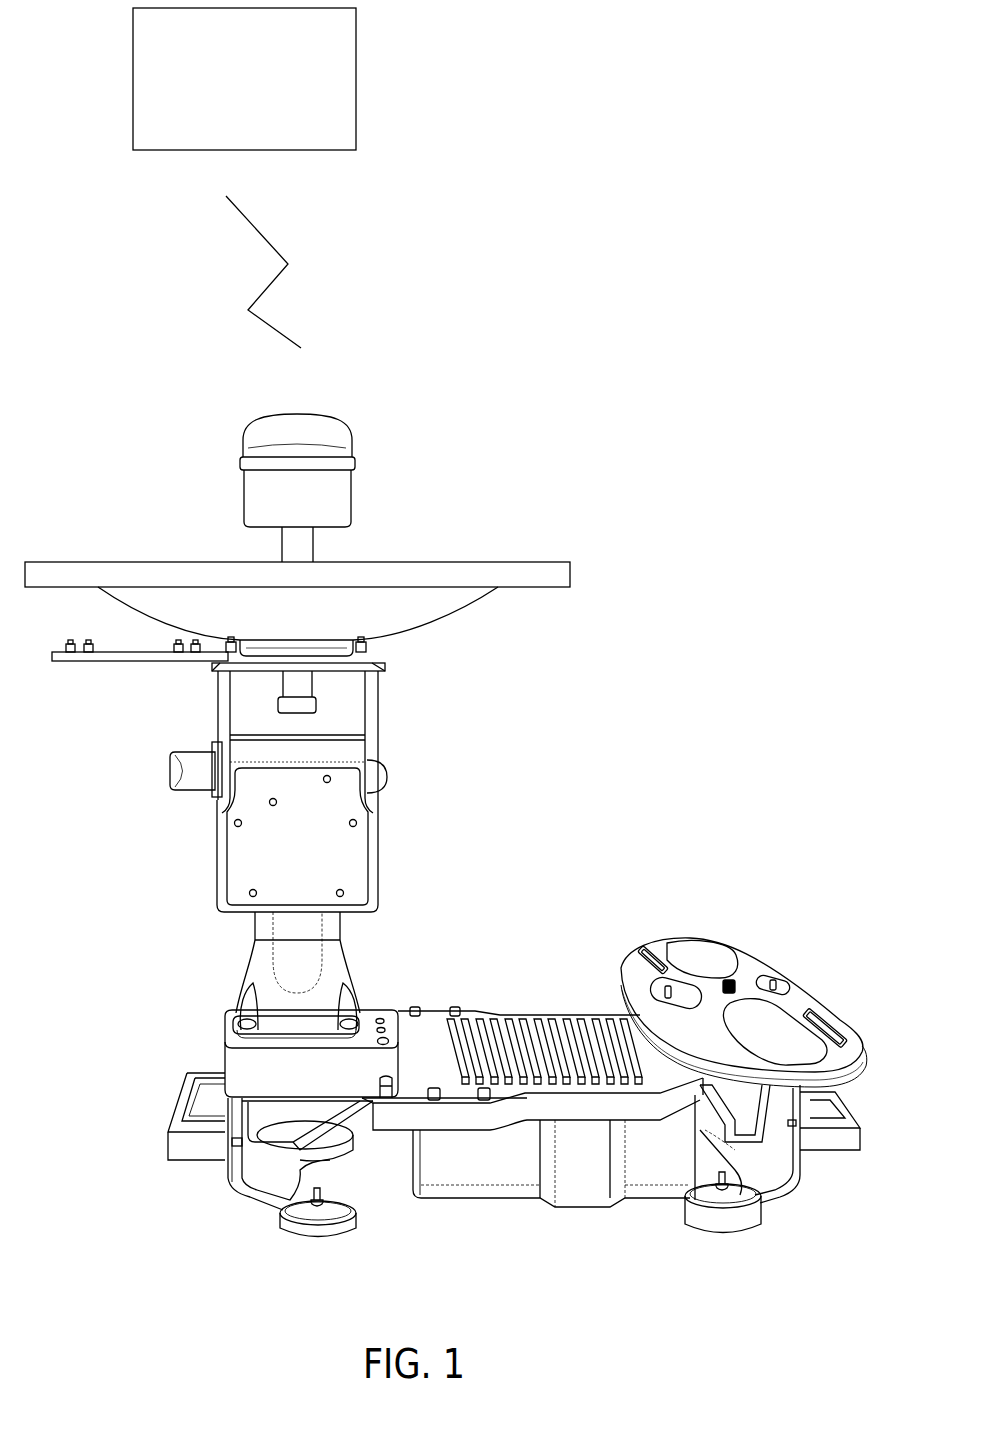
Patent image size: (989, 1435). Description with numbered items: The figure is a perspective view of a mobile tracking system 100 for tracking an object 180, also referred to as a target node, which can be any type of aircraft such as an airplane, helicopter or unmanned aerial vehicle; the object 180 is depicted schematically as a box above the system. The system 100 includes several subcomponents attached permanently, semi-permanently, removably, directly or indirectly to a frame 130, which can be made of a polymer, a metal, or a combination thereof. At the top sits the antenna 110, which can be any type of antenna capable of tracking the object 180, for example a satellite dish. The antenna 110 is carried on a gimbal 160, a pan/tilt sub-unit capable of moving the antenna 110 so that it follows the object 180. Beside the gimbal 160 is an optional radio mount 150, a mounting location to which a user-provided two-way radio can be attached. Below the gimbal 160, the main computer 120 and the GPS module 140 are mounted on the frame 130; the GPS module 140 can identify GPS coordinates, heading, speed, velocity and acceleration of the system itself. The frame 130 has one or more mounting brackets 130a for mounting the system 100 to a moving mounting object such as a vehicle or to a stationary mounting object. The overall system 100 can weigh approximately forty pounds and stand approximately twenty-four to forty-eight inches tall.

The mobile tracking system 100 is at (466, 455).
The antenna 110 is at (571, 574).
The main computer 120 is at (588, 1210).
The frame 130 is at (225, 1168).
The mounting brackets 130a is at (273, 1212).
The GPS module 140 is at (773, 980).
The radio mount 150 is at (93, 665).
The gimbal 160 is at (380, 843).
The object 180 is at (356, 86).